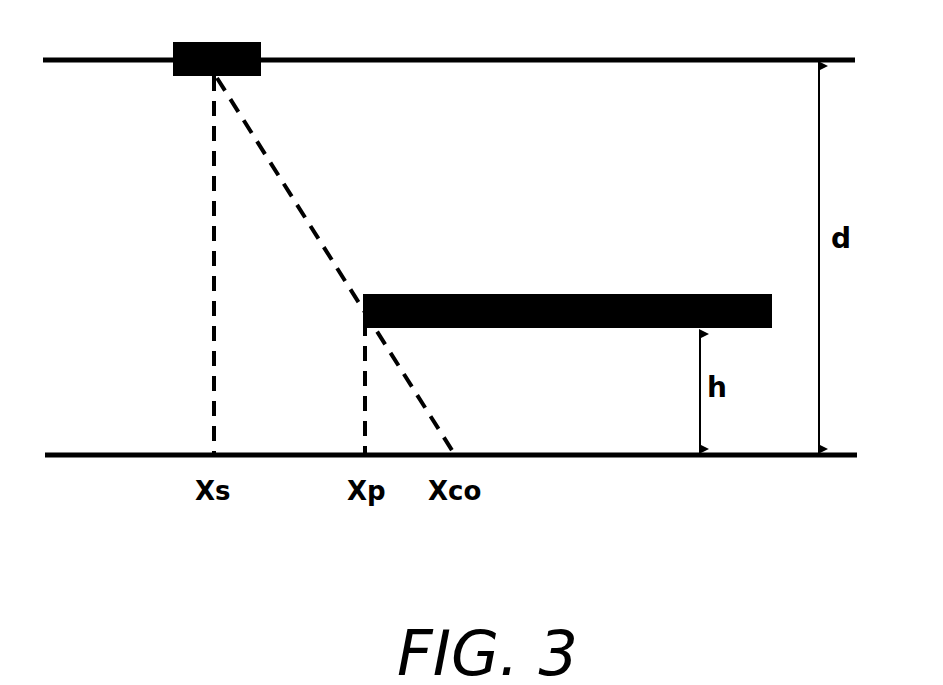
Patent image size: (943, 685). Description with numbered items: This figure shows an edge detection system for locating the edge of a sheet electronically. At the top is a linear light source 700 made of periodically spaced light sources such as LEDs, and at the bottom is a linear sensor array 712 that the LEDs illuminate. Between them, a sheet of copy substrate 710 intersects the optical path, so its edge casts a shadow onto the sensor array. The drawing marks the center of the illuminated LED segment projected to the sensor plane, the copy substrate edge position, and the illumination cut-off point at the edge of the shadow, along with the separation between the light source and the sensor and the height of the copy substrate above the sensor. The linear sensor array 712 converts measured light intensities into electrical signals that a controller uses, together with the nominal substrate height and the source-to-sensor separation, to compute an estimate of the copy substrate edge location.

The linear light source 700 is at (632, 61).
The copy substrate 710 is at (640, 293).
The linear sensor array 712 is at (758, 457).